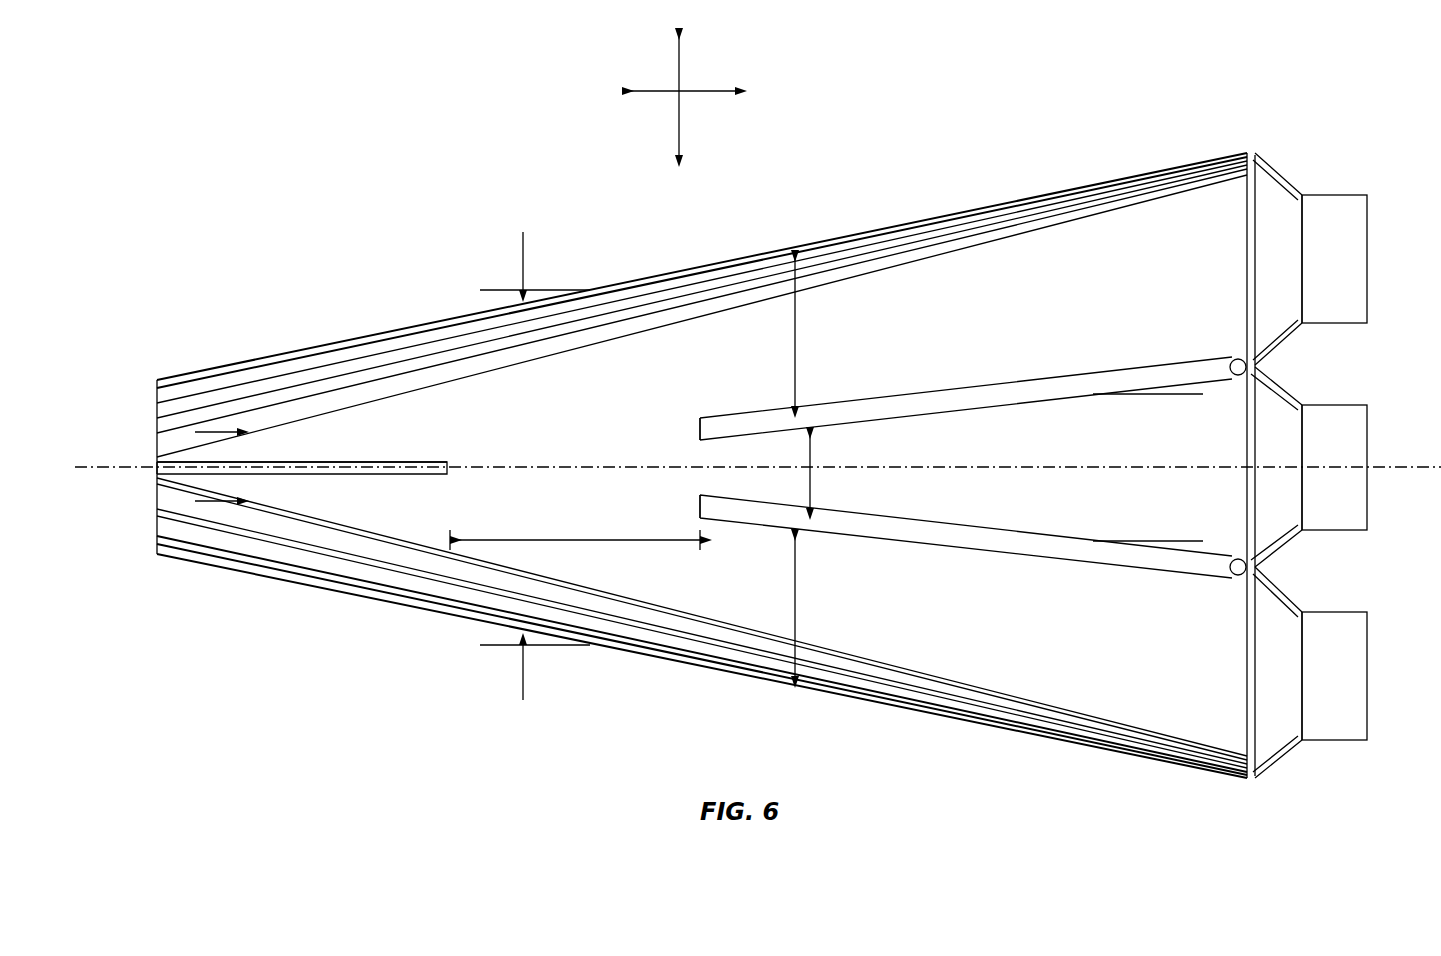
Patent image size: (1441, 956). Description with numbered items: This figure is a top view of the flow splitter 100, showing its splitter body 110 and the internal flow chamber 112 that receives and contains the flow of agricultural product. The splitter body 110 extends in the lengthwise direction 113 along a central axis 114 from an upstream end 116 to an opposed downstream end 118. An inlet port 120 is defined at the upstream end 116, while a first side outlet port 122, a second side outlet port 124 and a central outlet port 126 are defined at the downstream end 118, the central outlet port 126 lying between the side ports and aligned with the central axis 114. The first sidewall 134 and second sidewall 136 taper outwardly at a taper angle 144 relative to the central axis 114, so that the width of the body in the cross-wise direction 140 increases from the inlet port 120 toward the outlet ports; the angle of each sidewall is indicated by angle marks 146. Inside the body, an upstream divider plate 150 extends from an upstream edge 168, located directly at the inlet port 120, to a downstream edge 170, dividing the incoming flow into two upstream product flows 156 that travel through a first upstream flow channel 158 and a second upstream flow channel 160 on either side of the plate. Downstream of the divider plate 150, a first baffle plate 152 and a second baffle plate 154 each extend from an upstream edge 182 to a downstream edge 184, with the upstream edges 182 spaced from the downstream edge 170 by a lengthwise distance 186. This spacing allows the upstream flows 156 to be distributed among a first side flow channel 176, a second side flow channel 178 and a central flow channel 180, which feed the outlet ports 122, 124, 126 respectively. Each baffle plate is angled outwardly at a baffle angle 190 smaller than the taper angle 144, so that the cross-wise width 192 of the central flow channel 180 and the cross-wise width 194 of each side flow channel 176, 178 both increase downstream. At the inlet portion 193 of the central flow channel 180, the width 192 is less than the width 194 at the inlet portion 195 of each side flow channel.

The flow splitter 100 is at (767, 423).
The splitter body 110 is at (678, 465).
The internal flow chamber 112 is at (490, 372).
The lengthwise direction 113 is at (658, 90).
The central axis 114 is at (1385, 470).
The upstream end 116 is at (130, 390).
The downstream end 118 is at (1335, 418).
The inlet port 120 is at (157, 553).
The first side outlet port 122 is at (1368, 250).
The second side outlet port 124 is at (1368, 695).
The central outlet port 126 is at (1346, 470).
The first sidewall 134 is at (830, 240).
The second sidewall 136 is at (825, 690).
The cross-wise direction 140 is at (680, 78).
The taper angle 144 is at (995, 205).
The wall angle 146 is at (522, 268).
The divider plate 150 is at (270, 478).
The first baffle plate 152 is at (966, 459).
The second baffle plate 154 is at (928, 545).
The upstream product flows 156 is at (217, 432).
The first upstream flow channel 158 is at (329, 445).
The second upstream flow channel 160 is at (329, 513).
The upstream edge 168 is at (155, 465).
The downstream edge 170 is at (447, 462).
The first side flow channel 176 is at (871, 335).
The second side flow channel 178 is at (850, 616).
The central flow channel 180 is at (894, 445).
The upstream edge 182 is at (700, 428).
The downstream edge 184 is at (1257, 367).
The lengthwise distance 186 is at (575, 540).
The baffle angle 190 is at (1153, 432).
The cross-wise width 192 is at (810, 447).
The inlet portion 193 is at (690, 458).
The cross-wise width 194 is at (795, 325).
The inlet portion 195 is at (678, 346).